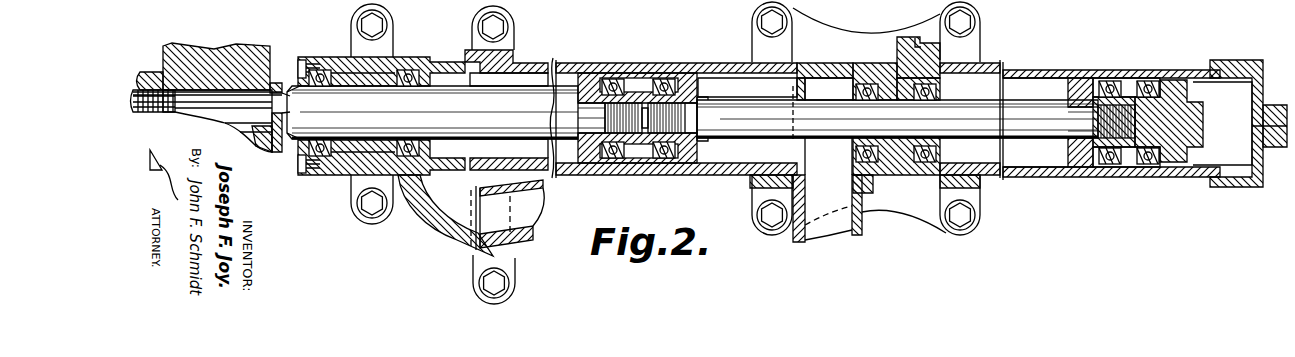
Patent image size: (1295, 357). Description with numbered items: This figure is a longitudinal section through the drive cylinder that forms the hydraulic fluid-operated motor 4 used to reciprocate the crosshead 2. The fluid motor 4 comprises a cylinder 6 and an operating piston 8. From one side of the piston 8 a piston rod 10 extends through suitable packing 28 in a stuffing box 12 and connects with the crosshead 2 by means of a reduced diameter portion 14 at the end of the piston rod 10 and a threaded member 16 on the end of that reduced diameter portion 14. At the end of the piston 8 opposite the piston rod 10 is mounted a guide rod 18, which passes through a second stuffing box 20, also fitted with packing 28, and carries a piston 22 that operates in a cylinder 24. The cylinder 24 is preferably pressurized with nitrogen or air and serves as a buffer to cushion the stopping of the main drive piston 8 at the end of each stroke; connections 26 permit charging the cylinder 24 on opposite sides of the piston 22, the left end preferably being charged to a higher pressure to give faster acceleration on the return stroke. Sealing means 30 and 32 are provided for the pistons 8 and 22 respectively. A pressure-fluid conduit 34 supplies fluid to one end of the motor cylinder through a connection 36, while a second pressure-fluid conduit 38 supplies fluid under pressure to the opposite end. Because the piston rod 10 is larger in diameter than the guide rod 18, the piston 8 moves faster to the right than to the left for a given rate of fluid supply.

The crosshead 2 is at (225, 62).
The hydraulic fluid-operated motor 4 is at (674, 177).
The cylinder 6 is at (730, 176).
The operating piston 8 is at (586, 166).
The piston rod 10 is at (318, 118).
The stuffing box 12 is at (346, 165).
The reduced diameter portion 14 is at (205, 105).
The threaded member 16 is at (149, 75).
The guide rod 18 is at (983, 117).
The stuffing box 20 is at (882, 80).
The piston 22 is at (1171, 105).
The cylinder 24 is at (1110, 73).
The connections 26 is at (916, 42).
The packing 28 is at (325, 68).
The sealing means 30 is at (637, 163).
The sealing means 32 is at (1128, 168).
The pressure-fluid conduit 34 is at (527, 224).
The connection 36 is at (426, 213).
The pressure-fluid conduit 38 is at (834, 226).